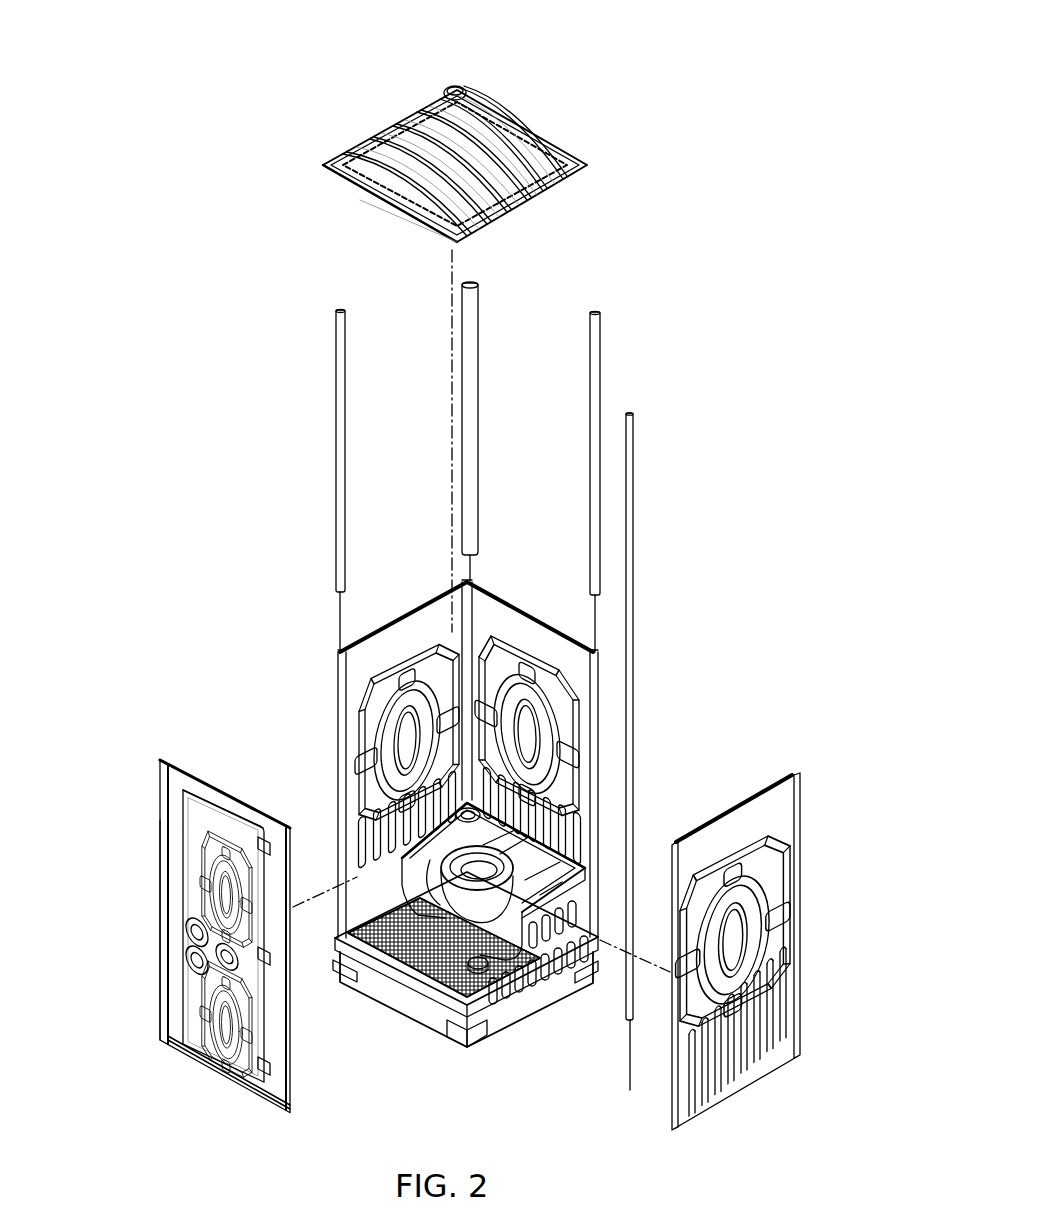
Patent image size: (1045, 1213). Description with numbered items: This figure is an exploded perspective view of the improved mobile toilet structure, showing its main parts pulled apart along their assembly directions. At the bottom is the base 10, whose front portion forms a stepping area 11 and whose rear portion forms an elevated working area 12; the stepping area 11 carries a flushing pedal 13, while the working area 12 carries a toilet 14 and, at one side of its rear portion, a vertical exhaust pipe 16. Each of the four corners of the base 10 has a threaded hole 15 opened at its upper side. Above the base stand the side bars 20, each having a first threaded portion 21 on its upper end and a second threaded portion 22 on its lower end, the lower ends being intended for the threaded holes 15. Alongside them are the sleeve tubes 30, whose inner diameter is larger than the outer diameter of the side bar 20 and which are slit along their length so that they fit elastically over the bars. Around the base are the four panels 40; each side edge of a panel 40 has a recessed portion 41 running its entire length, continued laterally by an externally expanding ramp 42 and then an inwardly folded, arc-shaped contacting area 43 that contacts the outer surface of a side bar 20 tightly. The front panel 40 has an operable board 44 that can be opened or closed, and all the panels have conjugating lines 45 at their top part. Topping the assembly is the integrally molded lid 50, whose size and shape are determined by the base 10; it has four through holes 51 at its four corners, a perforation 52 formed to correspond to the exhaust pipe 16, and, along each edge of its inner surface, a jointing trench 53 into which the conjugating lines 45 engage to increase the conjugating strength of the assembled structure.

The base 10 is at (523, 812).
The stepping area 11 is at (390, 950).
The elevated working area 12 is at (410, 822).
The flushing pedal 13 is at (520, 1007).
The toilet 14 is at (520, 887).
The threaded hole 15 is at (446, 1048).
The vertical exhaust pipe 16 is at (478, 325).
The side bar 20 is at (640, 788).
The first threaded portion 21 is at (632, 745).
The second threaded portion 22 is at (632, 1022).
The sleeve tube 30 is at (330, 433).
The panel 40 is at (523, 851).
The recessed portion 41 is at (163, 892).
The externally expanding ramp 42 is at (163, 801).
The inwardly folded contacting area 43 is at (163, 772).
The operable board 44 is at (186, 1047).
The conjugating line 45 is at (208, 787).
The lid 50 is at (560, 112).
The through hole 51 is at (323, 166).
The perforation 52 is at (448, 92).
The jointing trench 53 is at (367, 197).